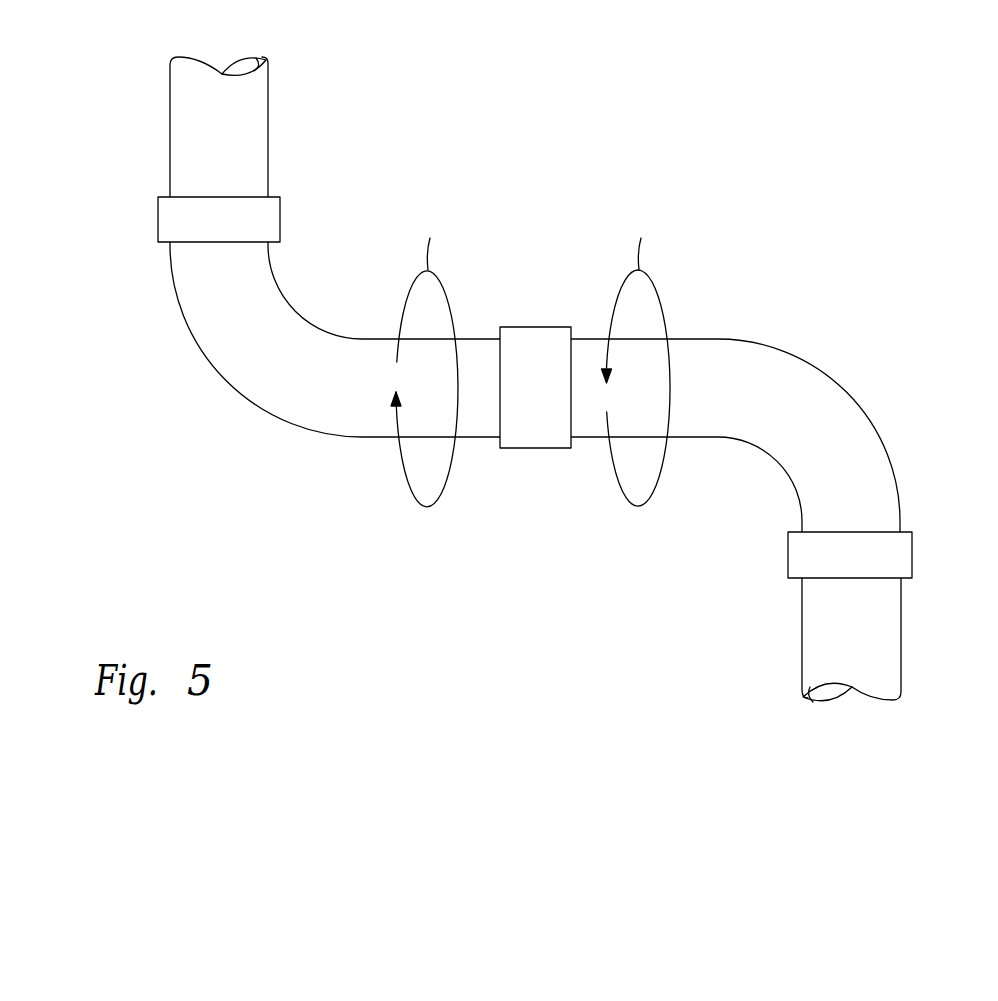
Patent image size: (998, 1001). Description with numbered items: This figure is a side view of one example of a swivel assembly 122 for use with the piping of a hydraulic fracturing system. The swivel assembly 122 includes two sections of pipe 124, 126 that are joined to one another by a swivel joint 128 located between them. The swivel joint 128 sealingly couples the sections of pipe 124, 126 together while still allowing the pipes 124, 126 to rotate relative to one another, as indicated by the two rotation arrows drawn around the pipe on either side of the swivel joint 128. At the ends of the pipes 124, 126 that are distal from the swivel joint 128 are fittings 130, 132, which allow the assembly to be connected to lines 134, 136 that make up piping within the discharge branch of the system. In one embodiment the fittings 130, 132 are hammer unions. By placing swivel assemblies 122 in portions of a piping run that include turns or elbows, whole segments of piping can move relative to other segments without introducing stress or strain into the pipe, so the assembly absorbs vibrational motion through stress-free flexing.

The swivel assembly 122 is at (868, 162).
The section of pipe 124 is at (230, 386).
The section of pipe 126 is at (817, 370).
The swivel joint 128 is at (532, 327).
The fitting 130 is at (158, 215).
The fitting 132 is at (912, 556).
The line 134 is at (168, 122).
The line 136 is at (901, 637).